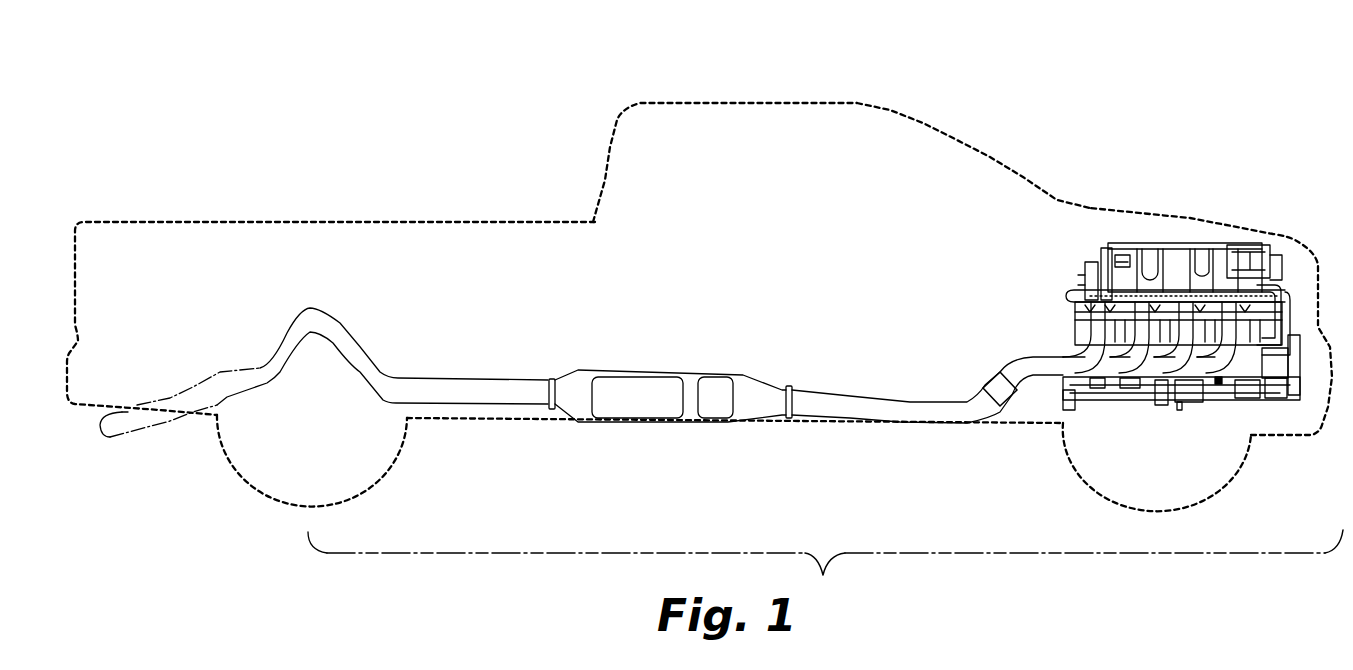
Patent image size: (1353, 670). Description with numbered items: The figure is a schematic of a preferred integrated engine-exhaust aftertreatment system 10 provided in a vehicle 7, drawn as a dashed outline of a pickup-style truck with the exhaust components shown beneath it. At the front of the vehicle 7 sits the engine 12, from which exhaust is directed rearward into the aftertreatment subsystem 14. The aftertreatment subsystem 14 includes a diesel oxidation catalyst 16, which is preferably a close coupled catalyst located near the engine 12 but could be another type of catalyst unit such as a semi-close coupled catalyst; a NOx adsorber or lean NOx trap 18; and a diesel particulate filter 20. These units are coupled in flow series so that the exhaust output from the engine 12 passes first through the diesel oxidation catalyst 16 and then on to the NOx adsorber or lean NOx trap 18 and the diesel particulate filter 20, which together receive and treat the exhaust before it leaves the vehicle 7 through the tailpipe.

The vehicle 7 is at (752, 103).
The integrated engine-exhaust aftertreatment system 10 is at (1098, 82).
The engine 12 is at (1181, 243).
The aftertreatment subsystem 14 is at (721, 455).
The diesel oxidation catalyst 16 is at (995, 375).
The NOx adsorber or lean NOx trap 18 is at (713, 387).
The diesel particulate filter 20 is at (603, 382).